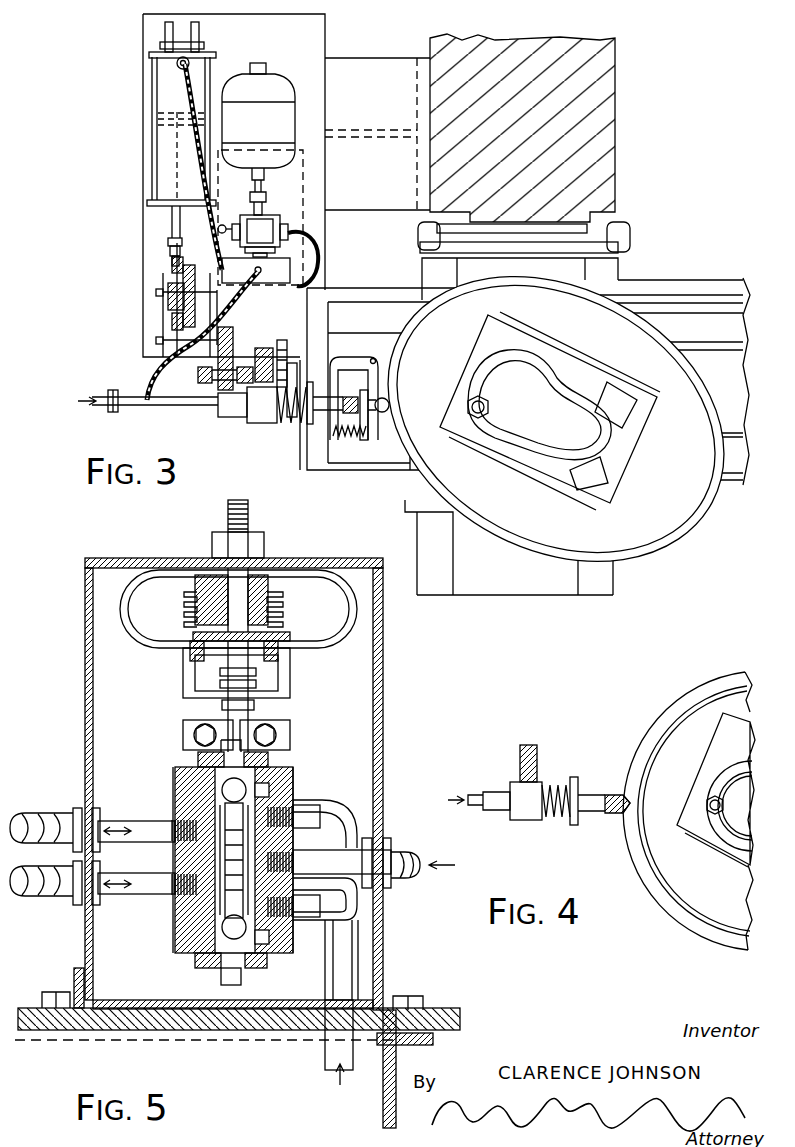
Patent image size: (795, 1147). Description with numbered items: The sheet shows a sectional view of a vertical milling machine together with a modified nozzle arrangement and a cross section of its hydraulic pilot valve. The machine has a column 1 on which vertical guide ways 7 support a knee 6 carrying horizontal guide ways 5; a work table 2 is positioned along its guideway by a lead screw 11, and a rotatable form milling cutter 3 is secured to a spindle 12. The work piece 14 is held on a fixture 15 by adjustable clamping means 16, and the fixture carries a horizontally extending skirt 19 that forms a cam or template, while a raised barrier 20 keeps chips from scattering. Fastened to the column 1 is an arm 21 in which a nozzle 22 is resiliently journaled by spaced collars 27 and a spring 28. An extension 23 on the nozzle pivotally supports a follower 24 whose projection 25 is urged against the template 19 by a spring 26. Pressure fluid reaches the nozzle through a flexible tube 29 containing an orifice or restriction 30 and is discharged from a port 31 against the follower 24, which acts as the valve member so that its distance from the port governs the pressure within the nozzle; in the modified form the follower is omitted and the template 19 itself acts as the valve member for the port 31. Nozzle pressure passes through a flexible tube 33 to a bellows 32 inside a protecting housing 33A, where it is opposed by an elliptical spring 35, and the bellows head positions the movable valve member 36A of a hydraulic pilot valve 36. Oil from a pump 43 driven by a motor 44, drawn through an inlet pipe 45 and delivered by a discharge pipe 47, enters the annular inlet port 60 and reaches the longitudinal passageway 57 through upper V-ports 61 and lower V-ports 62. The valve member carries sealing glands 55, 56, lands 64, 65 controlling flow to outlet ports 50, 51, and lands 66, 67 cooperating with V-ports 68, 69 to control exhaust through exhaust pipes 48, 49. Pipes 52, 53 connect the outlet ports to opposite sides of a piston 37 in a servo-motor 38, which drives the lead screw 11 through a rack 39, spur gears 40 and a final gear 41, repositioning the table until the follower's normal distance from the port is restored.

In FIG. 3, the column 1 is at (617, 105).
In FIG. 3, the work table 2 is at (728, 480).
In FIG. 3, the form milling cutter 3 is at (486, 408).
In FIG. 3, the horizontal guide ways 5 is at (417, 545).
In FIG. 3, the knee 6 is at (480, 596).
In FIG. 3, the vertical guide ways 7 is at (418, 242).
In FIG. 3, the lead screw 11 is at (286, 340).
In FIG. 3, the spindle 12 is at (484, 400).
In FIG. 3, the work piece 14 is at (539, 405).
In FIG. 3, the fixture 15 is at (628, 468).
In FIG. 3, the adjustable clamping means 16 is at (610, 395).
In FIG. 3, the skirt (cam or template) 19 is at (686, 520).
In FIG. 4, the skirt (cam or template) 19 is at (690, 689).
In FIG. 3, the raised barrier 20 is at (488, 524).
In FIG. 3, the arm 21 is at (265, 346).
In FIG. 4, the arm 21 is at (534, 746).
In FIG. 3, the nozzle 22 is at (354, 396).
In FIG. 4, the nozzle 22 is at (608, 815).
In FIG. 3, the extension 23 is at (343, 356).
In FIG. 3, the follower 24 is at (375, 358).
In FIG. 3, the projection 25 is at (388, 401).
In FIG. 3, the spring 26 is at (345, 438).
In FIG. 3, the spaced collars 27 is at (247, 417).
In FIG. 4, the spaced collars 27 is at (514, 817).
In FIG. 3, the spring 28 is at (290, 420).
In FIG. 4, the spring 28 is at (552, 818).
In FIG. 3, the flexible tube 29 is at (140, 407).
In FIG. 4, the flexible tube 29 is at (470, 792).
In FIG. 3, the orifice or partial restriction 30 is at (113, 389).
In FIG. 3, the port 31 is at (366, 410).
In FIG. 4, the port 31 is at (624, 797).
In FIG. 5, the bellows 32 is at (290, 616).
In FIG. 3, the flexible tube 33 is at (245, 296).
In FIG. 5, the flexible tube 33 is at (250, 511).
In FIG. 3, the protecting housing 33A is at (321, 284).
In FIG. 5, the protecting housing 33A is at (383, 692).
In FIG. 5, the elliptical spring 35 is at (325, 645).
In FIG. 5, the hydraulic pilot valve 36 is at (293, 773).
In FIG. 5, the movable valve member 36A is at (220, 976).
In FIG. 3, the piston 37 is at (172, 114).
In FIG. 3, the servo-motor 38 is at (152, 143).
In FIG. 3, the rack 39 is at (172, 268).
In FIG. 3, the spur gears 40 is at (172, 320).
In FIG. 3, the final gear 41 is at (218, 388).
In FIG. 3, the oil pump 43 is at (272, 220).
In FIG. 3, the motor 44 is at (268, 92).
In FIG. 3, the inlet pipe 45 is at (222, 225).
In FIG. 3, the discharge pipe 47 is at (320, 232).
In FIG. 5, the discharge pipe 47 is at (410, 850).
In FIG. 5, the exhaust pipe 48 is at (333, 808).
In FIG. 5, the exhaust pipe 49 is at (322, 922).
In FIG. 5, the outlet port 50 is at (136, 831).
In FIG. 5, the outlet port 51 is at (136, 884).
In FIG. 3, the pipe 52 is at (168, 242).
In FIG. 5, the pipe 52 is at (30, 814).
In FIG. 3, the pipe 53 is at (188, 76).
In FIG. 5, the pipe 53 is at (55, 897).
In FIG. 5, the sealing gland 55 is at (270, 752).
In FIG. 5, the sealing gland 56 is at (238, 930).
In FIG. 5, the passageway 57 is at (225, 752).
In FIG. 5, the inlet port 60 is at (329, 862).
In FIG. 5, the upper V-ports 61 is at (296, 845).
In FIG. 5, the lower V-ports 62 is at (290, 890).
In FIG. 5, the land 64 is at (215, 860).
In FIG. 5, the land 65 is at (215, 905).
In FIG. 5, the land 66 is at (270, 795).
In FIG. 5, the land 67 is at (270, 940).
In FIG. 5, the V-ports 68 is at (222, 790).
In FIG. 5, the V-ports 69 is at (222, 928).